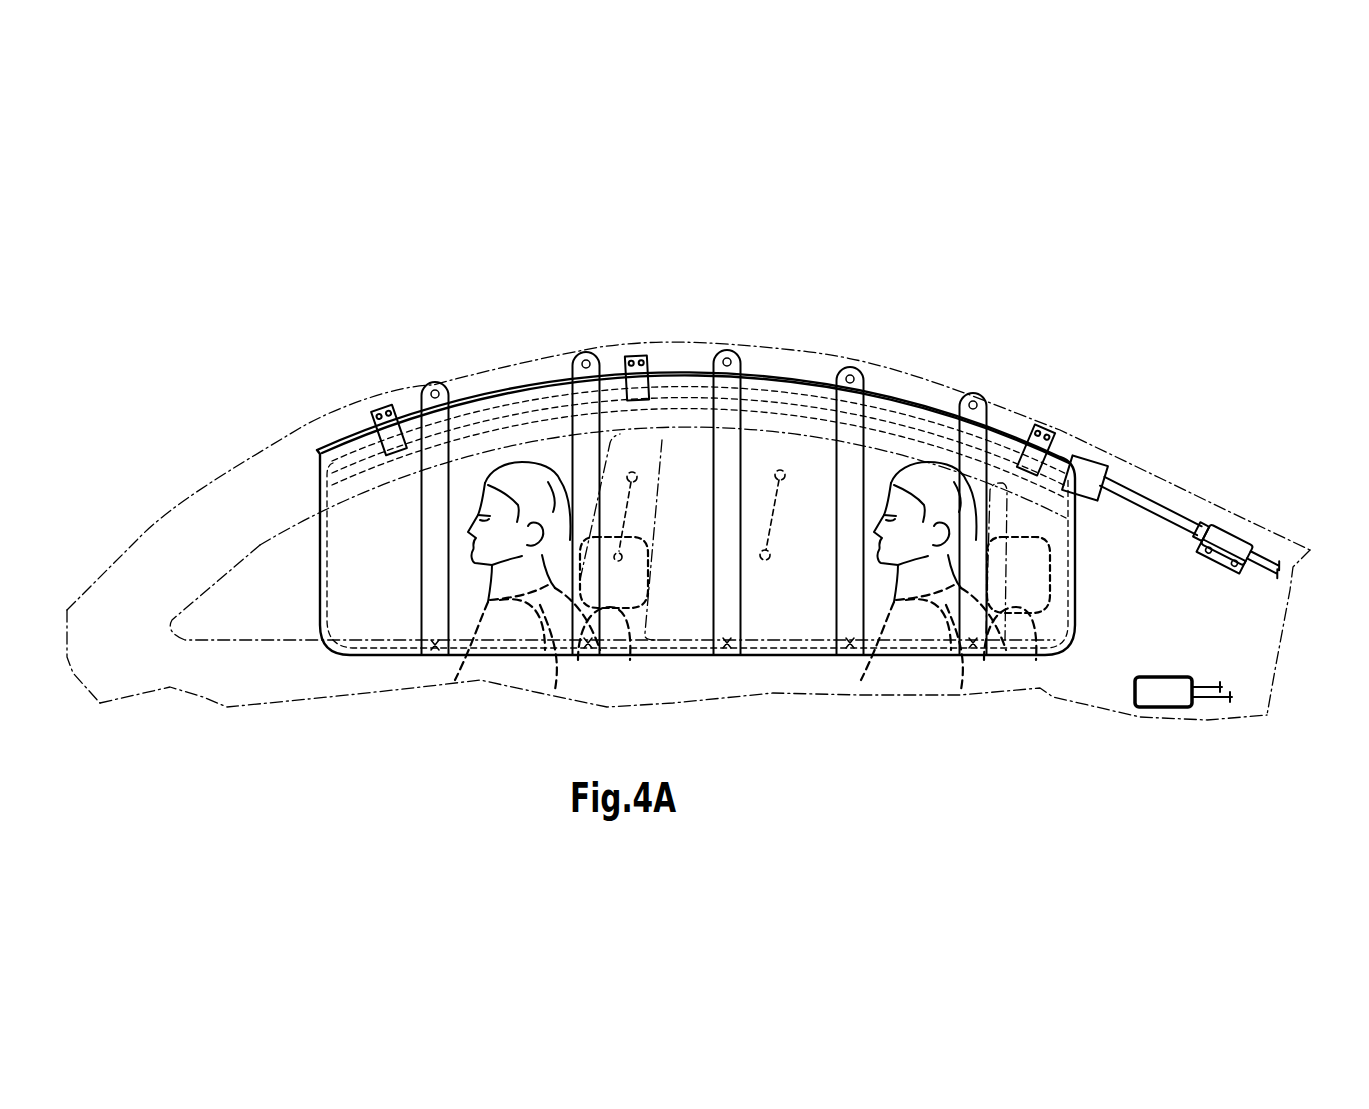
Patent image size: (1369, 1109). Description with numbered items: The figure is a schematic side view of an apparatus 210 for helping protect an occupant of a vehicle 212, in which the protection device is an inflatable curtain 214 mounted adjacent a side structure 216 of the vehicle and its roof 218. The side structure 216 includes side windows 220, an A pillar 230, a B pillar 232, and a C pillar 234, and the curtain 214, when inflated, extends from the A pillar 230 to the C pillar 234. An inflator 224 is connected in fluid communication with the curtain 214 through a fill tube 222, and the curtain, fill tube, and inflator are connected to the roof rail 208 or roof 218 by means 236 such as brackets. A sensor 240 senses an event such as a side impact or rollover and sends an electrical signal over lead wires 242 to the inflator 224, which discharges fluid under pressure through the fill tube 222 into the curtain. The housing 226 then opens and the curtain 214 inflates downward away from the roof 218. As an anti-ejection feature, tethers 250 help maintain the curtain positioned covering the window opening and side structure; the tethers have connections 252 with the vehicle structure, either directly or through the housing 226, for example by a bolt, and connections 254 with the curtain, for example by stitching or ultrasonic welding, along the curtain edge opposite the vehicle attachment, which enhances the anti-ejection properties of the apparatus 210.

The roof rail 208 is at (613, 357).
The apparatus 210 is at (372, 355).
The vehicle 212 is at (283, 450).
The inflatable curtain 214 is at (685, 603).
The side structure 216 is at (667, 673).
The roof 218 is at (812, 355).
The side windows 220 is at (233, 620).
The fill tube 222 is at (1160, 510).
The inflator 224 is at (1233, 540).
The housing 226 is at (660, 366).
The A pillar 230 is at (180, 540).
The B pillar 232 is at (652, 512).
The C pillar 234 is at (1298, 650).
The means 236 is at (383, 410).
The sensor 240 is at (1162, 700).
The lead wires 242 is at (1285, 563).
The tethers 250 is at (587, 460).
The connections 252 is at (435, 388).
The connections 254 is at (437, 648).